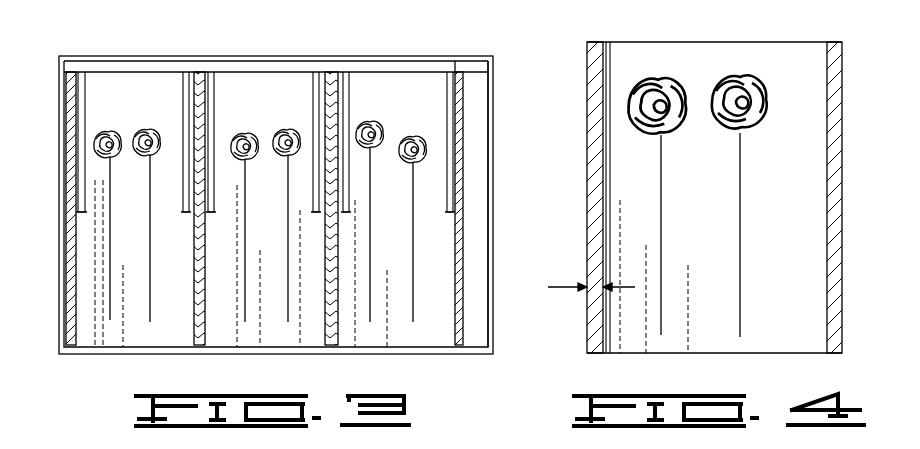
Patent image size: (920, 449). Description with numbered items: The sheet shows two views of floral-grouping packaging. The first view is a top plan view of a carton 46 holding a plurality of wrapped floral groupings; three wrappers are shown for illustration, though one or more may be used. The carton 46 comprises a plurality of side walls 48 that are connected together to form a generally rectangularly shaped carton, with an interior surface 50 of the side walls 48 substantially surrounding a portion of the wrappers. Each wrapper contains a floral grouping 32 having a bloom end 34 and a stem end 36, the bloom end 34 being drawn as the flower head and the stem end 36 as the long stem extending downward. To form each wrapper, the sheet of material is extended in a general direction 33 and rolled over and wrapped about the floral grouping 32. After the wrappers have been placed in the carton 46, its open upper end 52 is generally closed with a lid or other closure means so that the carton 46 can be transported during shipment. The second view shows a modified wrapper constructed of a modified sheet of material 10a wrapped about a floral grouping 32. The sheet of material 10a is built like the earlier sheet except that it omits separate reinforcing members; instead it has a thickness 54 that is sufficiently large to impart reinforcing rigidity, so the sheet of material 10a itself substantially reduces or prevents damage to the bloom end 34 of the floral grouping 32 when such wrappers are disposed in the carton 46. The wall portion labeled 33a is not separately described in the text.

In FIG. 4, the modified sheet of material 10a is at (587, 183).
In FIG. 4, the floral grouping 32 is at (746, 196).
In FIG. 3, the general direction 33 is at (70, 236).
In FIG. 4, the side wall 33a is at (584, 123).
In FIG. 3, the bloom end 34 is at (142, 127).
In FIG. 4, the bloom end 34 is at (768, 76).
In FIG. 4, the stem end 36 is at (745, 301).
In FIG. 3, the carton 46 is at (212, 56).
In FIG. 3, the side walls 48 is at (362, 56).
In FIG. 3, the interior surface 50 is at (459, 68).
In FIG. 3, the open upper end 52 is at (494, 100).
In FIG. 4, the thickness 54 is at (565, 287).